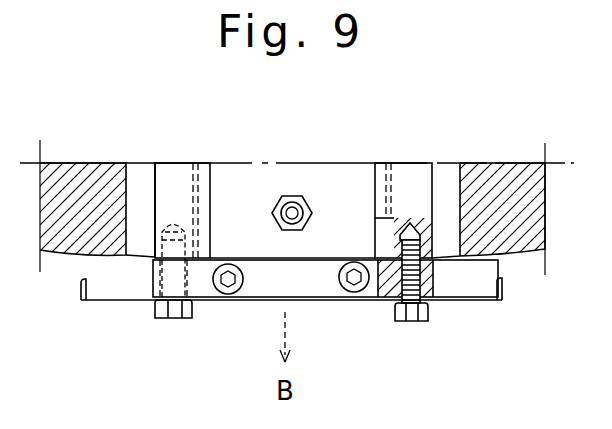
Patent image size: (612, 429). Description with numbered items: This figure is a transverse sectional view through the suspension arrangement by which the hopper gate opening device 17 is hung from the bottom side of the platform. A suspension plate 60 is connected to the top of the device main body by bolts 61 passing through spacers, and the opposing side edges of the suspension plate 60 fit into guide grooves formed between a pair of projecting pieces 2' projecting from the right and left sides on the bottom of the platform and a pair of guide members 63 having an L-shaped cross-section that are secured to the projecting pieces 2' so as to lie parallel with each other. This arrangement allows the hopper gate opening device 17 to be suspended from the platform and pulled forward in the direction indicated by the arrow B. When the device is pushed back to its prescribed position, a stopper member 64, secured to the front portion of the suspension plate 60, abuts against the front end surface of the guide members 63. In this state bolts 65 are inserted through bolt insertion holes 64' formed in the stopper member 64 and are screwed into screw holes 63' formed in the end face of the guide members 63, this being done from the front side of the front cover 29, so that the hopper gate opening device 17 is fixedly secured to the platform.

The projecting piece 2' is at (306, 214).
The guide member 63 is at (300, 177).
The screw hole 63' is at (306, 214).
The suspension plate 60 is at (353, 168).
The bolt 61 is at (293, 202).
The stopper member 64 is at (325, 313).
The bolt insertion hole 64' is at (306, 214).
The bolt 65 is at (173, 320).
The hopper gate opening device 17 is at (136, 314).
The front cover 29 is at (468, 303).